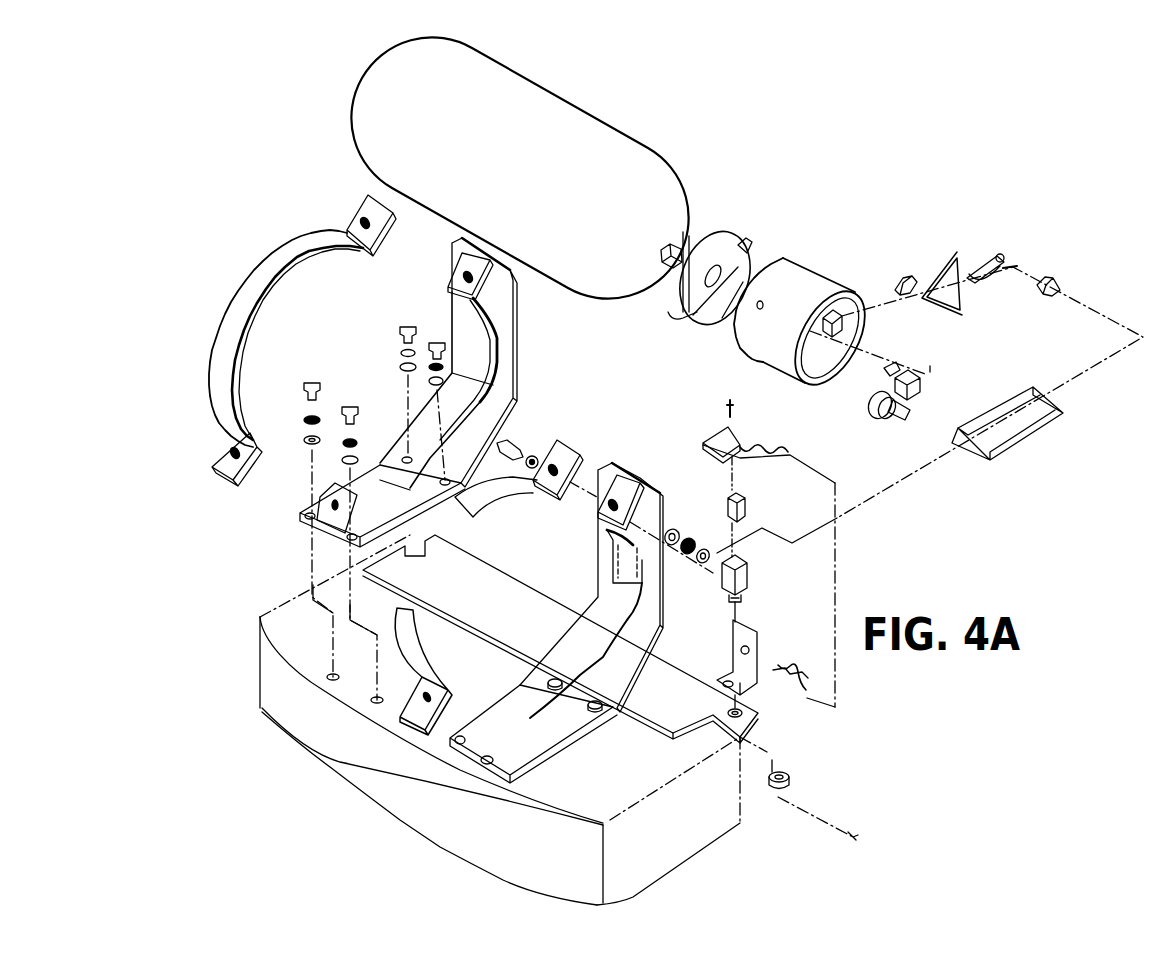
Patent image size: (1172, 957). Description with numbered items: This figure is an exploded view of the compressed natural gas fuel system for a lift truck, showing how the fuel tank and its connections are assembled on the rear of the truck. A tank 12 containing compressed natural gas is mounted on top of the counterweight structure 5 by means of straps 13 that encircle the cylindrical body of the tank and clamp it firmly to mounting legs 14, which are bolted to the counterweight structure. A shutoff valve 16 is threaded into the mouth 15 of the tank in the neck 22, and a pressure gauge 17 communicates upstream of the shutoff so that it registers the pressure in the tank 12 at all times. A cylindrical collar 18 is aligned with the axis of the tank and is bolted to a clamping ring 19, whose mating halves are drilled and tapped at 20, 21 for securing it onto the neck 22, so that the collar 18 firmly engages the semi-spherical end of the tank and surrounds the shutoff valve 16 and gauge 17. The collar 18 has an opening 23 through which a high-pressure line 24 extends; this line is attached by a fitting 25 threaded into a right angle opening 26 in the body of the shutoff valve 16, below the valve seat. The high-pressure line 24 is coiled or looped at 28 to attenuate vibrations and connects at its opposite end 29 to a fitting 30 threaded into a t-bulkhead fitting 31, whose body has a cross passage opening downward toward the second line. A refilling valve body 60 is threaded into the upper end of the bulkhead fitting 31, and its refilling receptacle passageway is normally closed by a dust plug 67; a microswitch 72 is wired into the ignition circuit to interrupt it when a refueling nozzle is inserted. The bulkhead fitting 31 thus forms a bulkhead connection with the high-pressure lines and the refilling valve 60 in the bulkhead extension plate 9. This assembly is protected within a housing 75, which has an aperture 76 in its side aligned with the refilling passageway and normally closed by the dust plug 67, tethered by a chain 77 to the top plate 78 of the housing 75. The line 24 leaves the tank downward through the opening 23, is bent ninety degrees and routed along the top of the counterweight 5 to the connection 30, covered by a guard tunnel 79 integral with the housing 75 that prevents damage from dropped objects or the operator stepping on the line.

The counterweight structure 5 is at (638, 846).
The bulkhead extension plate 9 is at (650, 710).
The tank 12 is at (486, 166).
The straps 13 is at (238, 313).
The mounting legs 14 is at (517, 373).
The mouth 15 is at (685, 250).
The shutoff valve 16 is at (918, 380).
The pressure gauge 17 is at (883, 425).
The cylindrical collar 18 is at (807, 287).
The clamping ring 19 is at (720, 243).
The drilled and tapped location 20 is at (682, 307).
The drilled and tapped location 21 is at (747, 253).
The neck 22 is at (670, 247).
The opening 23 is at (840, 323).
The high-pressure line 24 is at (938, 300).
The fitting 25 is at (912, 277).
The right angle opening 26 is at (930, 366).
The loop 28 is at (997, 252).
The opposite end 29 is at (1013, 270).
The fitting 30 is at (1050, 278).
The t-bulkhead fitting 31 is at (747, 577).
The refilling valve body 60 is at (713, 490).
The dust plug 67 is at (777, 665).
The microswitch 72 is at (728, 507).
The housing 75 is at (750, 675).
The aperture 76 is at (750, 642).
The chain 77 is at (786, 452).
The top plate 78 is at (747, 443).
The guard tunnel 79 is at (1020, 445).